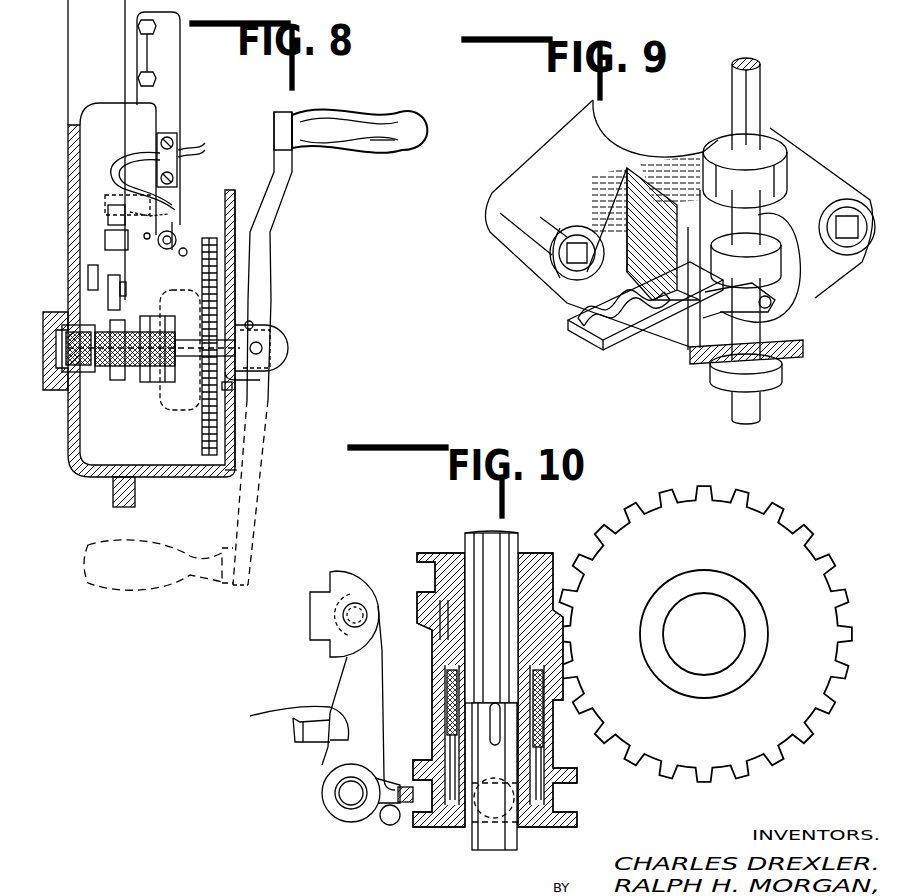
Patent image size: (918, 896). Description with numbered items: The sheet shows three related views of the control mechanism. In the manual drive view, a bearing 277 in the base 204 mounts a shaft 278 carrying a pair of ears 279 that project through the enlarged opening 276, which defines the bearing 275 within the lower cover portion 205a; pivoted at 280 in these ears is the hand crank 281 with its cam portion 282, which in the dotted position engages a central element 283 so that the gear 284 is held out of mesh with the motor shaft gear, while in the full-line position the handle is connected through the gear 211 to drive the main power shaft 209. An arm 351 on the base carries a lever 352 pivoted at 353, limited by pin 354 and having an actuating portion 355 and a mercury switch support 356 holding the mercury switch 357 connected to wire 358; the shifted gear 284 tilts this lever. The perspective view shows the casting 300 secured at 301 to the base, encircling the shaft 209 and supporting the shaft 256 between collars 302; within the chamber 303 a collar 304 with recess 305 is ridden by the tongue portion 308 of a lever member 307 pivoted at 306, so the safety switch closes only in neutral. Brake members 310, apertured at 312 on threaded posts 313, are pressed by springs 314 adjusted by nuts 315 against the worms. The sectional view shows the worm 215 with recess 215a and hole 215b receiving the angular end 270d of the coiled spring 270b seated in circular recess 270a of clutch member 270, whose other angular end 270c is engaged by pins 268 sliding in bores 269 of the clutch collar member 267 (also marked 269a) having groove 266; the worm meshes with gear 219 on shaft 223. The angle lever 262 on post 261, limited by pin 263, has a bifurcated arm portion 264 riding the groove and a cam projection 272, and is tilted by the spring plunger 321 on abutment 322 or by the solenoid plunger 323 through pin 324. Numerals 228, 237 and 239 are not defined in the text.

In FIG. 8, the base 204 is at (70, 226).
In FIG. 8, the lower cover portion 205a is at (238, 238).
In FIG. 10, the drive shaft 209 is at (468, 545).
In FIG. 8, the gear 211 is at (168, 402).
In FIG. 10, the worm 215 is at (438, 622).
In FIG. 10, the recess 215a is at (455, 672).
In FIG. 10, the hole 215b is at (452, 658).
In FIG. 10, the gear 219 is at (655, 530).
In FIG. 10, the shaft 223 is at (704, 634).
In FIG. 9, the member 228 is at (536, 20).
In FIG. 9, the member 237 is at (749, 6).
In FIG. 9, the member 239 is at (570, 14).
In FIG. 8, the shaft 256 is at (473, 80).
In FIG. 9, the shaft 256 is at (762, 104).
In FIG. 10, the post 261 is at (345, 800).
In FIG. 10, the angle lever 262 is at (350, 690).
In FIG. 10, the pin 263 is at (388, 825).
In FIG. 10, the arm portion 264 is at (425, 803).
In FIG. 10, the groove 266 is at (565, 803).
In FIG. 10, the clutch collar member 267 is at (582, 778).
In FIG. 10, the pins 268 is at (455, 770).
In FIG. 10, the bores 269 is at (555, 760).
In FIG. 10, the clutch member 269a is at (570, 818).
In FIG. 10, the clutch member 270 is at (440, 731).
In FIG. 10, the circular recess 270a is at (452, 705).
In FIG. 10, the coiled spring 270b is at (448, 688).
In FIG. 10, the angular end 270c is at (452, 752).
In FIG. 10, the angular end 270d is at (450, 642).
In FIG. 9, the cam projection 272 is at (462, 40).
In FIG. 8, the bearing 275 is at (234, 386).
In FIG. 8, the opening 276 is at (253, 324).
In FIG. 8, the bearing 277 is at (70, 392).
In FIG. 8, the shaft 278 is at (95, 362).
In FIG. 8, the ears 279 is at (262, 380).
In FIG. 8, the pivot 280 is at (263, 348).
In FIG. 8, the hand crank 281 is at (283, 210).
In FIG. 8, the cam portion 282 is at (285, 360).
In FIG. 8, the central element 283 is at (290, 326).
In FIG. 8, the gear 284 is at (230, 474).
In FIG. 9, the casting 300 is at (530, 197).
In FIG. 9, the securing means 301 is at (548, 268).
In FIG. 9, the collars 302 is at (782, 178).
In FIG. 9, the chamber 303 is at (800, 315).
In FIG. 9, the collar 304 is at (832, 208).
In FIG. 9, the recess 305 is at (782, 284).
In FIG. 9, the pivot 306 is at (700, 340).
In FIG. 9, the lever member 307 is at (636, 345).
In FIG. 9, the tongue portion 308 is at (790, 335).
In FIG. 8, the brake member 310 is at (400, 0).
In FIG. 8, the aperture 312 is at (443, 0).
In FIG. 8, the threaded post 313 is at (419, 0).
In FIG. 8, the spring 314 is at (397, 0).
In FIG. 8, the nut 315 is at (408, 0).
In FIG. 10, the spring plunger 321 is at (312, 740).
In FIG. 10, the abutment 322 is at (270, 720).
In FIG. 10, the solenoid plunger 323 is at (322, 640).
In FIG. 10, the pin 324 is at (358, 610).
In FIG. 8, the arm 351 is at (177, 82).
In FIG. 8, the lever 352 is at (155, 246).
In FIG. 8, the pivot 353 is at (174, 232).
In FIG. 8, the pin 354 is at (130, 250).
In FIG. 8, the actuating portion 355 is at (187, 248).
In FIG. 8, the mercury switch support 356 is at (107, 212).
In FIG. 8, the mercury switch 357 is at (100, 204).
In FIG. 8, the wire 358 is at (118, 157).